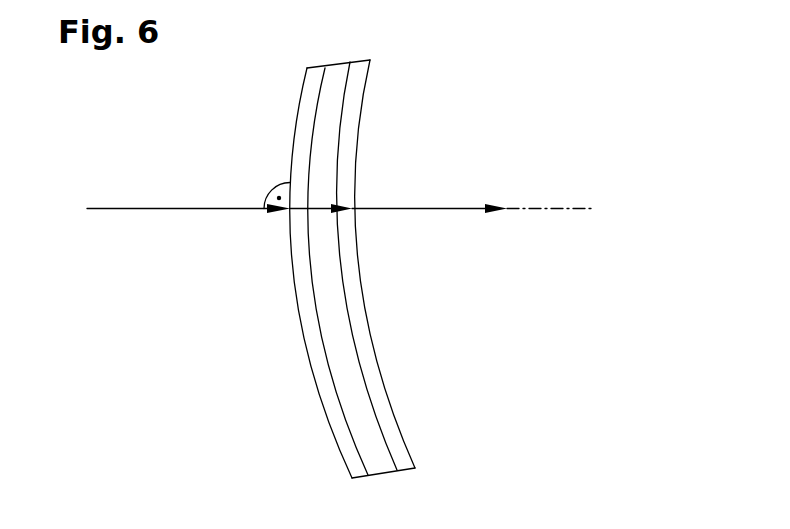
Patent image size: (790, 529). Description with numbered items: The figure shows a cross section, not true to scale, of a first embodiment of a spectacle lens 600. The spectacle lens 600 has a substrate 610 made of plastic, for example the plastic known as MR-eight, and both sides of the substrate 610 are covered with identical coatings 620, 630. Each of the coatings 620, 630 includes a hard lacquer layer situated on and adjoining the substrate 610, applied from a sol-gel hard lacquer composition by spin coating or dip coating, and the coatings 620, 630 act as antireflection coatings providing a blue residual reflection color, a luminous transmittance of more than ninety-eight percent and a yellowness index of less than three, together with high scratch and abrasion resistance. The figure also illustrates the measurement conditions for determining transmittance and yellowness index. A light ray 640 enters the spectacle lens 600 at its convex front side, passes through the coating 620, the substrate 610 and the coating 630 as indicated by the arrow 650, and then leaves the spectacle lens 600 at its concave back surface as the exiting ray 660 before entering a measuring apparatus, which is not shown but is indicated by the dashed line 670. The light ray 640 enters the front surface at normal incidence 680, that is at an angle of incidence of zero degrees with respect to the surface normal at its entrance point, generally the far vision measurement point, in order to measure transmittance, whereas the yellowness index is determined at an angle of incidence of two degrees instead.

The spectacle lens 600 is at (438, 88).
The substrate 610 is at (373, 251).
The coating 620 is at (350, 461).
The coating 630 is at (398, 456).
The light ray 640 is at (198, 210).
The arrow 650 is at (317, 209).
The exiting light ray 660 is at (457, 209).
The dashed line 670 is at (553, 212).
The normal incidence 680 is at (275, 181).